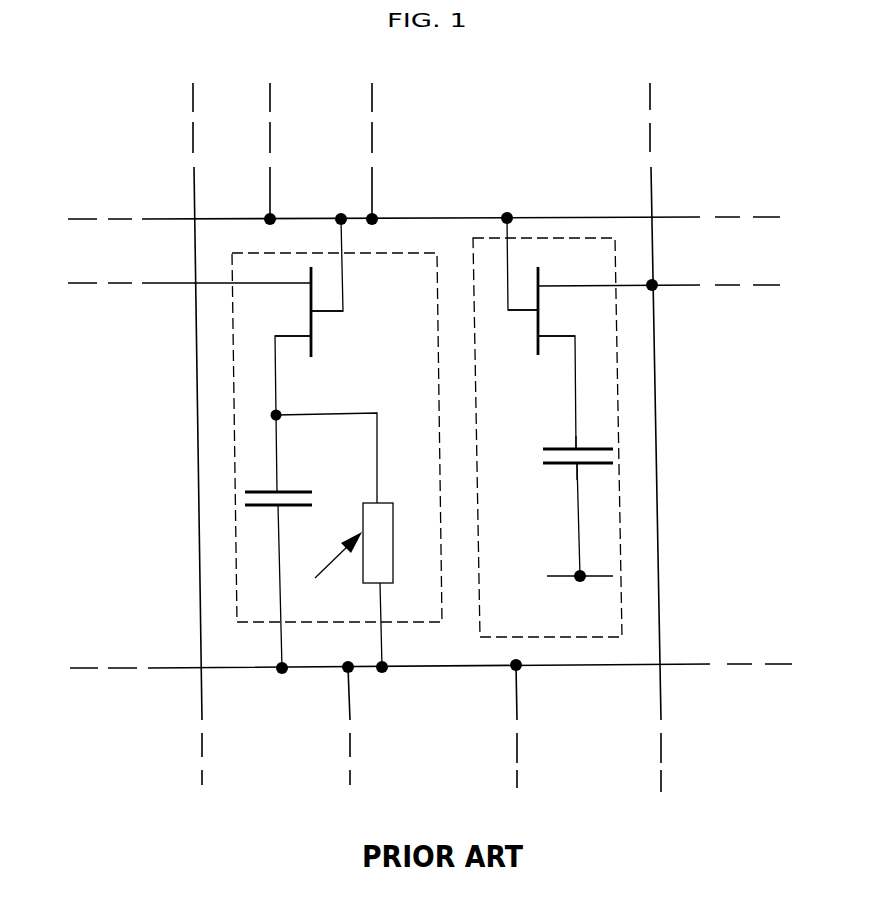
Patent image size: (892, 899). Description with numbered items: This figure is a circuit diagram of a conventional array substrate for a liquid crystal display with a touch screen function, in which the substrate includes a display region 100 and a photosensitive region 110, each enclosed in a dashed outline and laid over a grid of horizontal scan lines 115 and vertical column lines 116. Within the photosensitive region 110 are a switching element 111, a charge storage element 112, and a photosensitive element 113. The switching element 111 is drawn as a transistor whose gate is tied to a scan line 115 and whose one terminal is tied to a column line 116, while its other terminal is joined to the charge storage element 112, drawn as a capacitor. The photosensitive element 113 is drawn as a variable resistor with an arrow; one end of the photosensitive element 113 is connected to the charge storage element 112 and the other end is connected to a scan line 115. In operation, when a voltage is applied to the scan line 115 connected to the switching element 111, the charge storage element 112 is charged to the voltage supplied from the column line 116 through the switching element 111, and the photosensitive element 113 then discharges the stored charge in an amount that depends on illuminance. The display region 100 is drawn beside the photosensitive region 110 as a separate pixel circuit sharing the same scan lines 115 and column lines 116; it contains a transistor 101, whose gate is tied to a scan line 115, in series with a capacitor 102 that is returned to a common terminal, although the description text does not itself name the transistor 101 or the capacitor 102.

The display region 100 is at (640, 393).
The switching transistor 101 is at (528, 323).
The liquid crystal capacitor 102 is at (615, 456).
The photosensitive region 110 is at (220, 420).
The switching element 111 is at (325, 322).
The charge storage element 112 is at (242, 493).
The photosensitive element 113 is at (395, 542).
The scan line 115 is at (457, 218).
The column line 116 is at (652, 203).